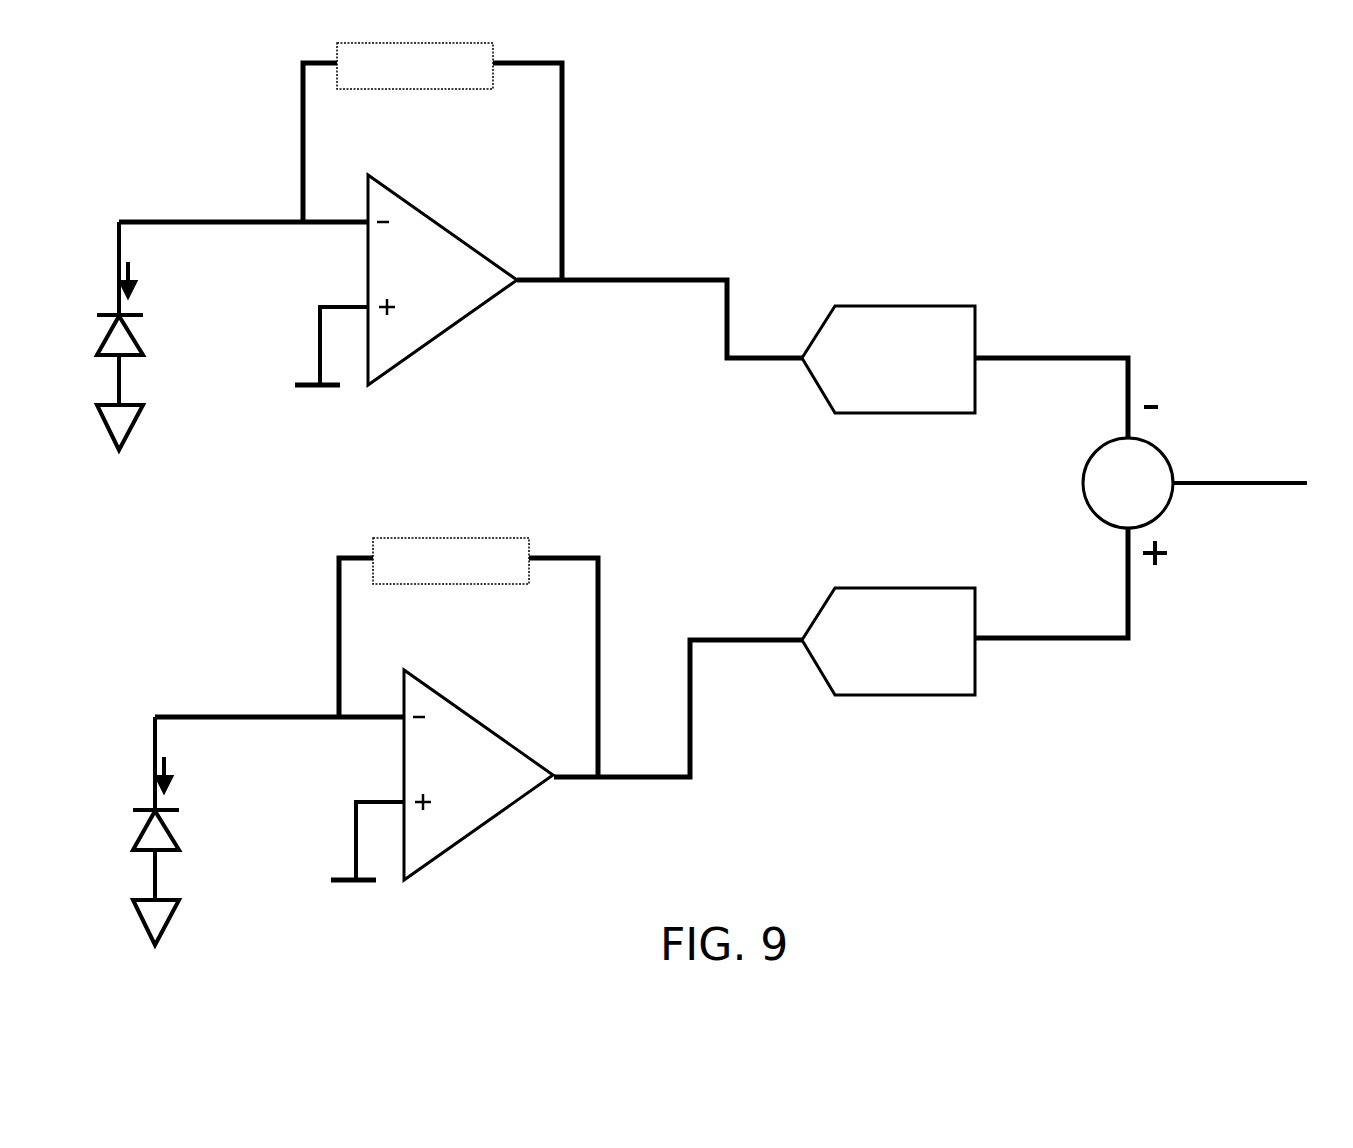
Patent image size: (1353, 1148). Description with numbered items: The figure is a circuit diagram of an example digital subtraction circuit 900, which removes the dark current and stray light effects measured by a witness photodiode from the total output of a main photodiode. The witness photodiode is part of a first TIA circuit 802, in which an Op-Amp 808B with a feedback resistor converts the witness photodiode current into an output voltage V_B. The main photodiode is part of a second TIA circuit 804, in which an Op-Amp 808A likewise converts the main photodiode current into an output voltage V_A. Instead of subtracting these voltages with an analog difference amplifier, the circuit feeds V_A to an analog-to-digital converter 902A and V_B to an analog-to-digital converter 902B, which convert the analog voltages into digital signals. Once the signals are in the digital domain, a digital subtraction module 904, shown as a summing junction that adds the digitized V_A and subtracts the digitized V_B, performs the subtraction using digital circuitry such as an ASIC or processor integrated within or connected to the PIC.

The digital subtraction circuit 900 is at (1142, 134).
The first TIA circuit 802 is at (220, 108).
The second TIA circuit 804 is at (238, 618).
The Op-Amp 808A is at (478, 775).
The Op-Amp 808B is at (410, 297).
The analog-to-digital converter 902A is at (878, 686).
The analog-to-digital converter 902B is at (878, 404).
The digital subtraction module 904 is at (1084, 473).